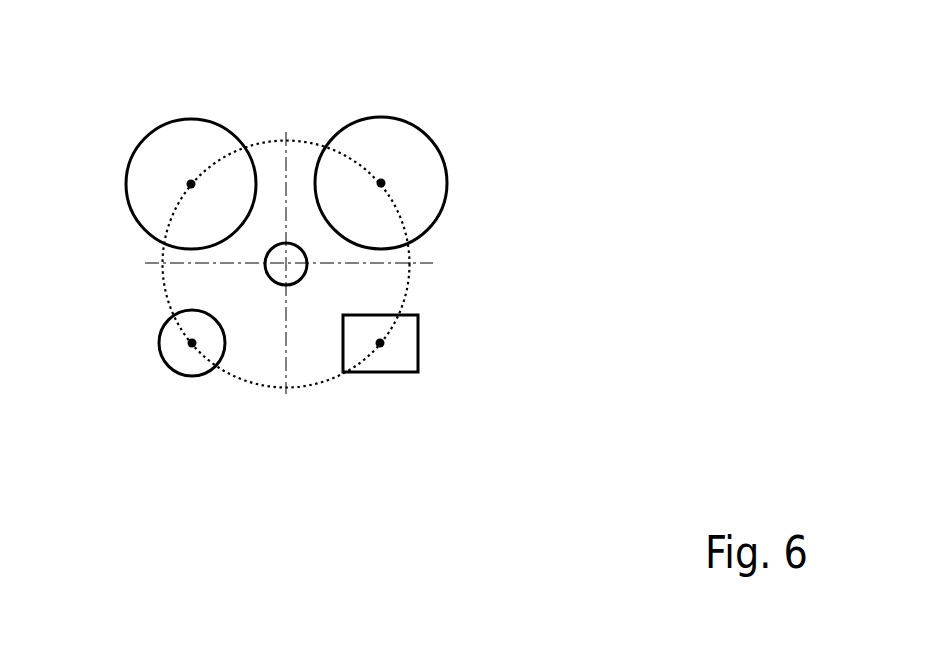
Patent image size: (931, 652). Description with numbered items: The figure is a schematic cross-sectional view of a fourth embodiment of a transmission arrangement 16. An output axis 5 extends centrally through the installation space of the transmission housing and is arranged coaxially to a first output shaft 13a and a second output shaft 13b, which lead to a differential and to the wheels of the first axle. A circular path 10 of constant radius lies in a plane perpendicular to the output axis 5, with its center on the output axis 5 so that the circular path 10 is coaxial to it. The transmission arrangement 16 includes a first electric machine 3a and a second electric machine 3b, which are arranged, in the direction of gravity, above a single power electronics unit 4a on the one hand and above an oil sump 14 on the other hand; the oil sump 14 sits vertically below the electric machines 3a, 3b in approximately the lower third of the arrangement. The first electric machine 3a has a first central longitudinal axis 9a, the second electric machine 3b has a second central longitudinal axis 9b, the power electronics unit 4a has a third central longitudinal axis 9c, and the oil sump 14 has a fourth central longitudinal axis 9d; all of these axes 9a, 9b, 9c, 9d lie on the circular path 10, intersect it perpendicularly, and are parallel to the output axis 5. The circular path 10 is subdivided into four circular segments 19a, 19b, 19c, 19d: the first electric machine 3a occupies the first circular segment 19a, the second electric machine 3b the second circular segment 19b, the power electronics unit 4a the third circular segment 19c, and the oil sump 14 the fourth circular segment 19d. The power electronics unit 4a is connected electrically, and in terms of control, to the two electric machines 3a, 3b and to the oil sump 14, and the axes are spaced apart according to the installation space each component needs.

The first electric machine 3a is at (207, 119).
The second electric machine 3b is at (441, 217).
The power electronics unit 4a is at (165, 367).
The output axis 5 is at (286, 264).
The first central longitudinal axis 9a is at (188, 183).
The second central longitudinal axis 9b is at (384, 181).
The third central longitudinal axis 9c is at (188, 343).
The fourth central longitudinal axis 9d is at (384, 344).
The circular path 10 is at (305, 142).
The first output shaft 13a is at (296, 399).
The second output shaft 13b is at (292, 285).
The oil sump 14 is at (418, 337).
The transmission arrangement 16 is at (458, 130).
The first circular segment 19a is at (200, 160).
The second circular segment 19b is at (408, 205).
The third circular segment 19c is at (193, 357).
The fourth circular segment 19d is at (380, 355).